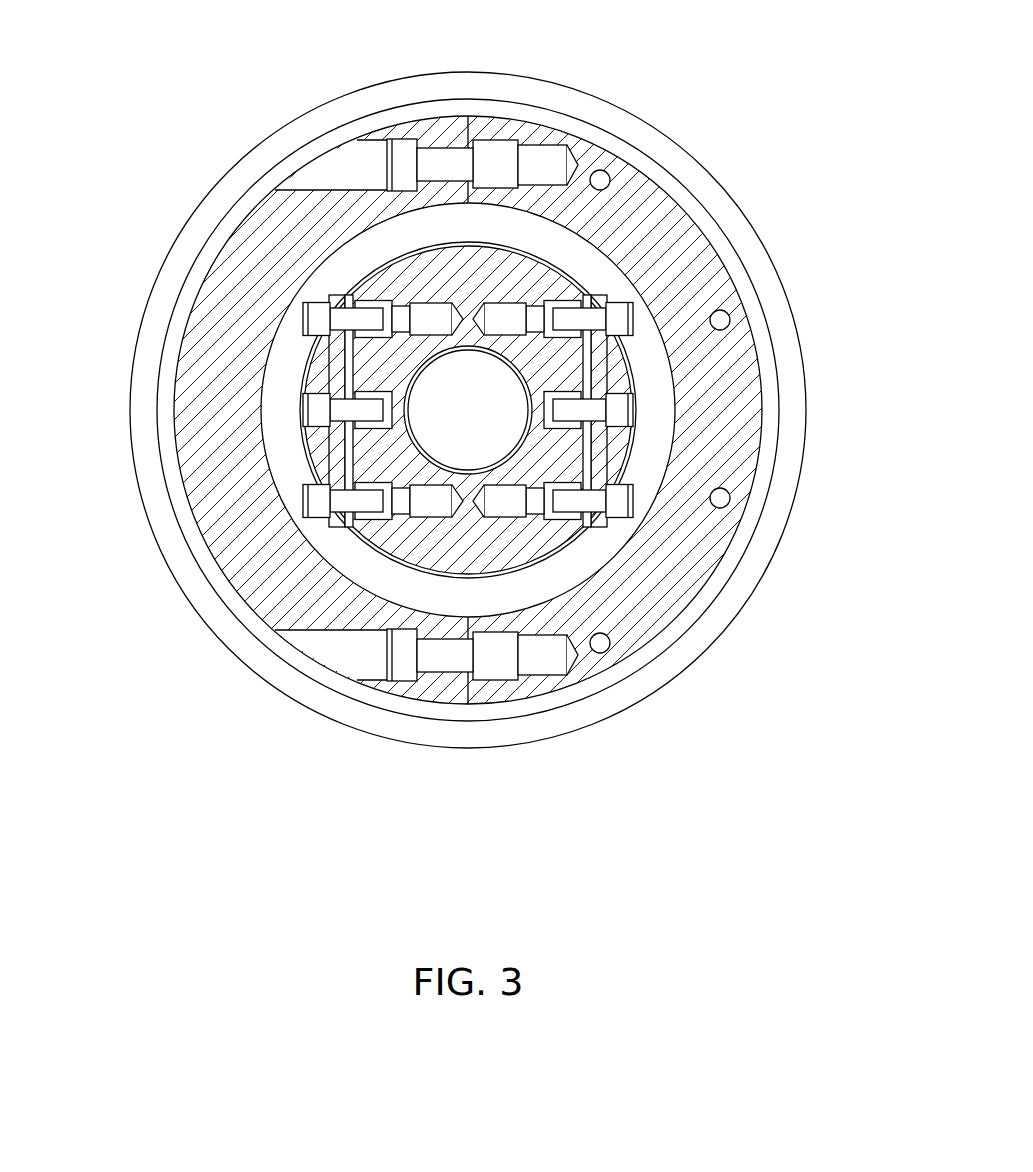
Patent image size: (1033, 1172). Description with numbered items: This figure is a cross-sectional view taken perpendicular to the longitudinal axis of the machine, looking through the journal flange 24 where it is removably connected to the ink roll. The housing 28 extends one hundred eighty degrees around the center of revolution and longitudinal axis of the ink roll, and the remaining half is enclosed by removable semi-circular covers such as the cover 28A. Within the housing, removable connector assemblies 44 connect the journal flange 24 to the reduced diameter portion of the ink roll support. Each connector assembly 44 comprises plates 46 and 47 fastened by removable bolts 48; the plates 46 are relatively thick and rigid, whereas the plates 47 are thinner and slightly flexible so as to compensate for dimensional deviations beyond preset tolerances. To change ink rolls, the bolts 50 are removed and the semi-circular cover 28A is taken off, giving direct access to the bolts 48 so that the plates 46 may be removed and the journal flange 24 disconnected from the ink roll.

The flange 24 is at (465, 267).
The housing 28 is at (652, 243).
The removable semi-circular cover 28A is at (230, 289).
The removable connector assembly 44 is at (305, 300).
The plate 46 is at (338, 347).
The plate 47 is at (350, 378).
The removable bolt 48 is at (315, 502).
The bolt 50 is at (405, 160).